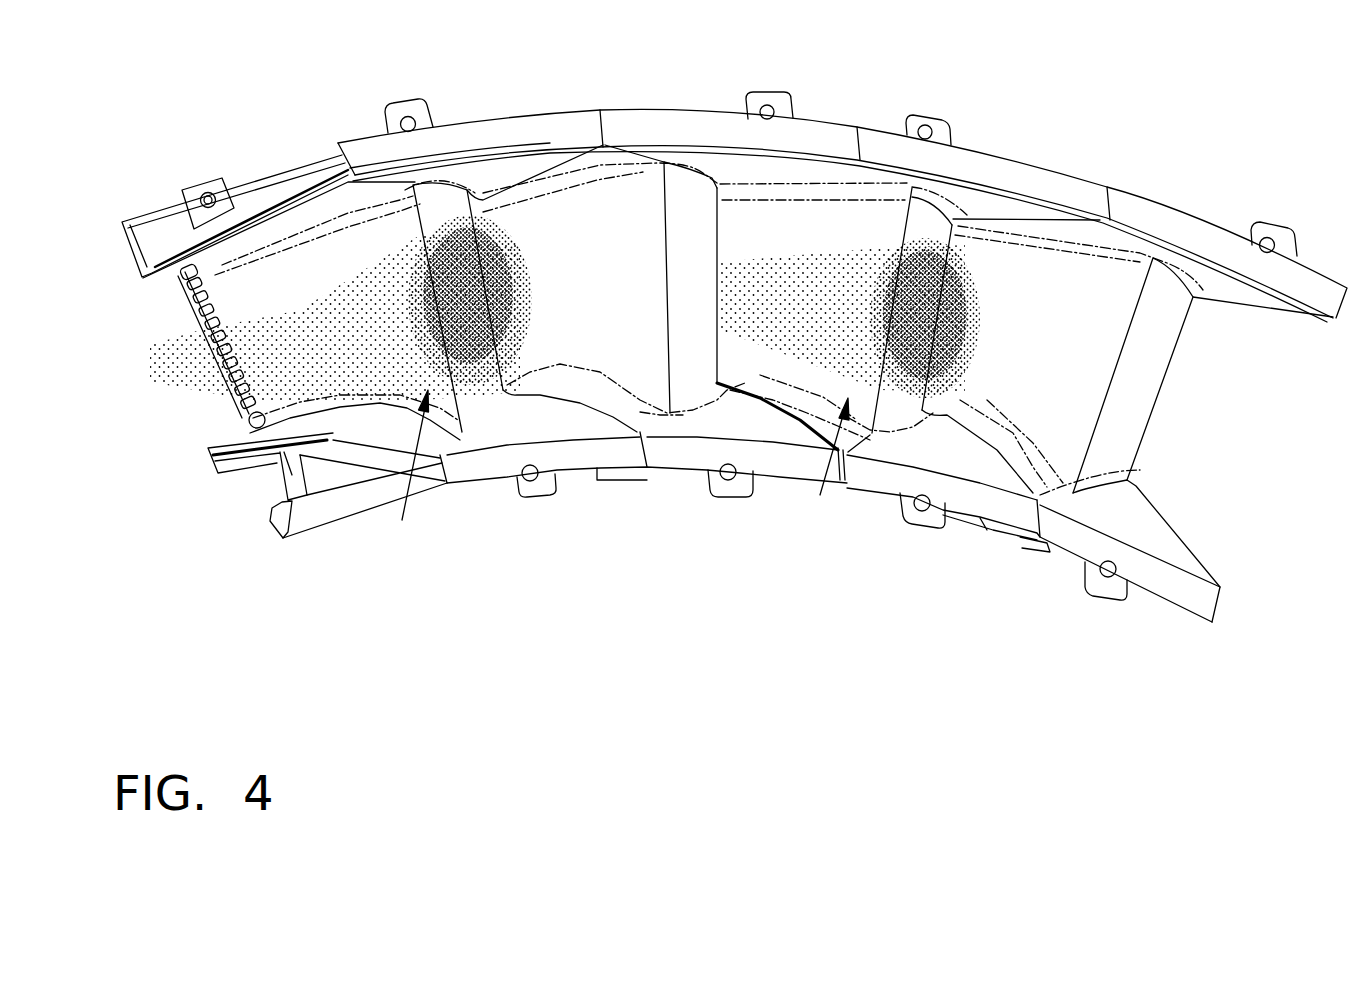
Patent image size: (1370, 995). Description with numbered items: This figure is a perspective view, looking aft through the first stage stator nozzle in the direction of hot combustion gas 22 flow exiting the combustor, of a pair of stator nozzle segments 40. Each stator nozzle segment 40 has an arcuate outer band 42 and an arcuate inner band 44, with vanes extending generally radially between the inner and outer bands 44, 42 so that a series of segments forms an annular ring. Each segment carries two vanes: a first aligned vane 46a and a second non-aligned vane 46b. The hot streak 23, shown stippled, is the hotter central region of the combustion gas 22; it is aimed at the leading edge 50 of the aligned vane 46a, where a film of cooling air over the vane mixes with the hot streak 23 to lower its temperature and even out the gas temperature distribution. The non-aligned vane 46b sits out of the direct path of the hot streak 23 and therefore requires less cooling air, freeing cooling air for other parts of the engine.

The stator nozzle segment 40 is at (619, 56).
The outer band 42 is at (637, 110).
The inner band 44 is at (597, 453).
The aligned vane 46a is at (470, 208).
The non-aligned vane 46b is at (683, 233).
The leading edge 50 is at (410, 213).
The hot streak 23 is at (485, 285).
The hot combustion gas 22 is at (402, 520).